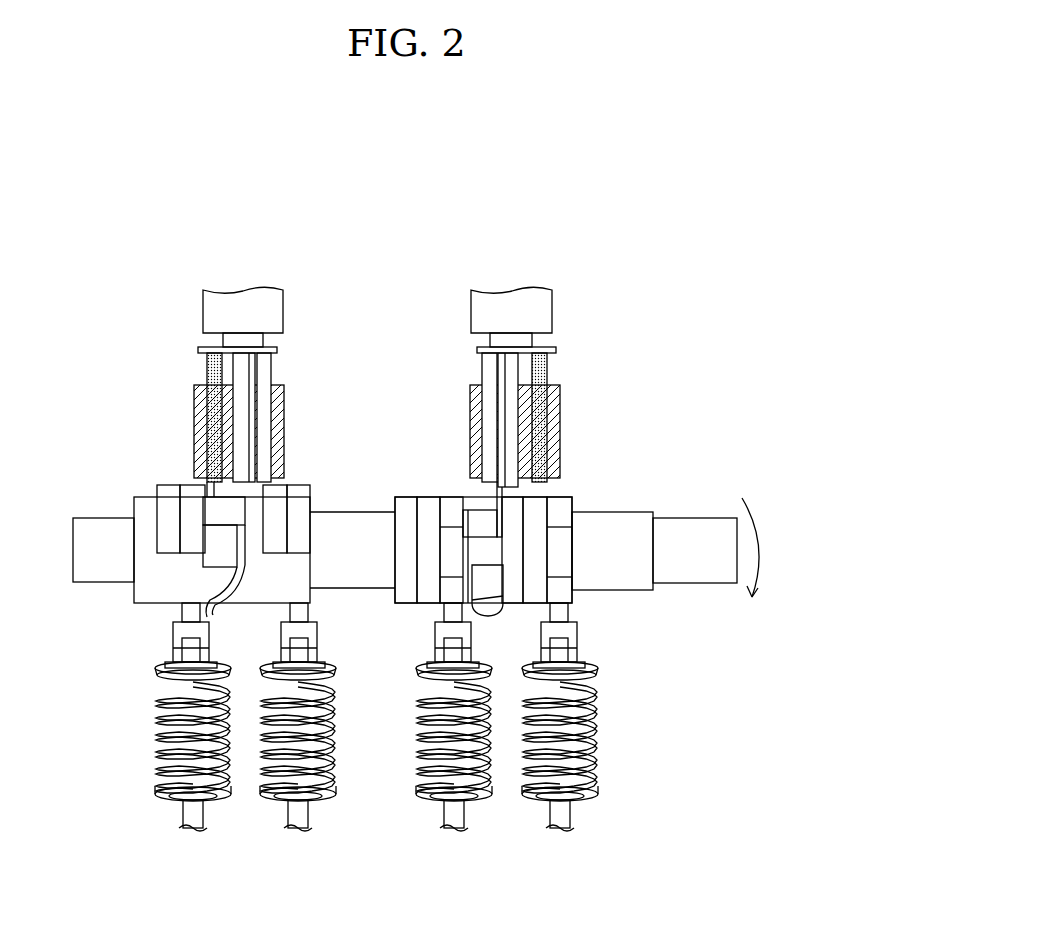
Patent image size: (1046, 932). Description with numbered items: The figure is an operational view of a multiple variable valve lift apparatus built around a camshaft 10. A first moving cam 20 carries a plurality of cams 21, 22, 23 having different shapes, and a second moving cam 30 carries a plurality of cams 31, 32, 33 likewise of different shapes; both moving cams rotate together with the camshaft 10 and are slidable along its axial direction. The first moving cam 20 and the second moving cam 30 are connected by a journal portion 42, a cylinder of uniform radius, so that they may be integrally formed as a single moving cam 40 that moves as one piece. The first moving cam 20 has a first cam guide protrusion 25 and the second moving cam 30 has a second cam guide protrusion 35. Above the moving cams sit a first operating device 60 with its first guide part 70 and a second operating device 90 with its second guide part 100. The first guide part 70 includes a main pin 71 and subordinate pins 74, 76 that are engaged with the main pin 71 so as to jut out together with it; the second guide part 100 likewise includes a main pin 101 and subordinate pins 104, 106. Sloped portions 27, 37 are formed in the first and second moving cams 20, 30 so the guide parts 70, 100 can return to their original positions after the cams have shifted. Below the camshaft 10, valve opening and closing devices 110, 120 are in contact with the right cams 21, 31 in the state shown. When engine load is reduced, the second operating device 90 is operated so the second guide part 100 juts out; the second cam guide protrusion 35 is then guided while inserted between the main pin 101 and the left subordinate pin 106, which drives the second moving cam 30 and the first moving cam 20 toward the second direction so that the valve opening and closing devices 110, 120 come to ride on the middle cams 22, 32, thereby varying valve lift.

The camshaft 10 is at (93, 568).
The first moving cam 20 is at (224, 652).
The cam 21 is at (188, 486).
The cam 22 is at (162, 486).
The cam 23 is at (140, 508).
The first cam guide protrusion 25 is at (225, 611).
The sloped portion 27 is at (220, 545).
The second moving cam 30 is at (527, 636).
The cam 31 is at (447, 497).
The cam 32 is at (420, 497).
The cam 33 is at (403, 497).
The second cam guide protrusion 35 is at (482, 605).
The sloped portion 37 is at (504, 610).
The moving cam 40 is at (420, 875).
The journal portion 42 is at (355, 512).
The first operating device 60 is at (290, 300).
The first guide part 70 is at (254, 414).
The main pin 71 is at (245, 405).
The subordinate pin 74 is at (264, 368).
The subordinate pin 76 is at (217, 368).
The second operating device 90 is at (558, 300).
The second guide part 100 is at (538, 410).
The main pin 101 is at (508, 418).
The subordinate pin 104 is at (540, 365).
The left subordinate pin 106 is at (490, 370).
The valve opening and closing device 110 is at (200, 823).
The valve opening and closing device 120 is at (461, 823).